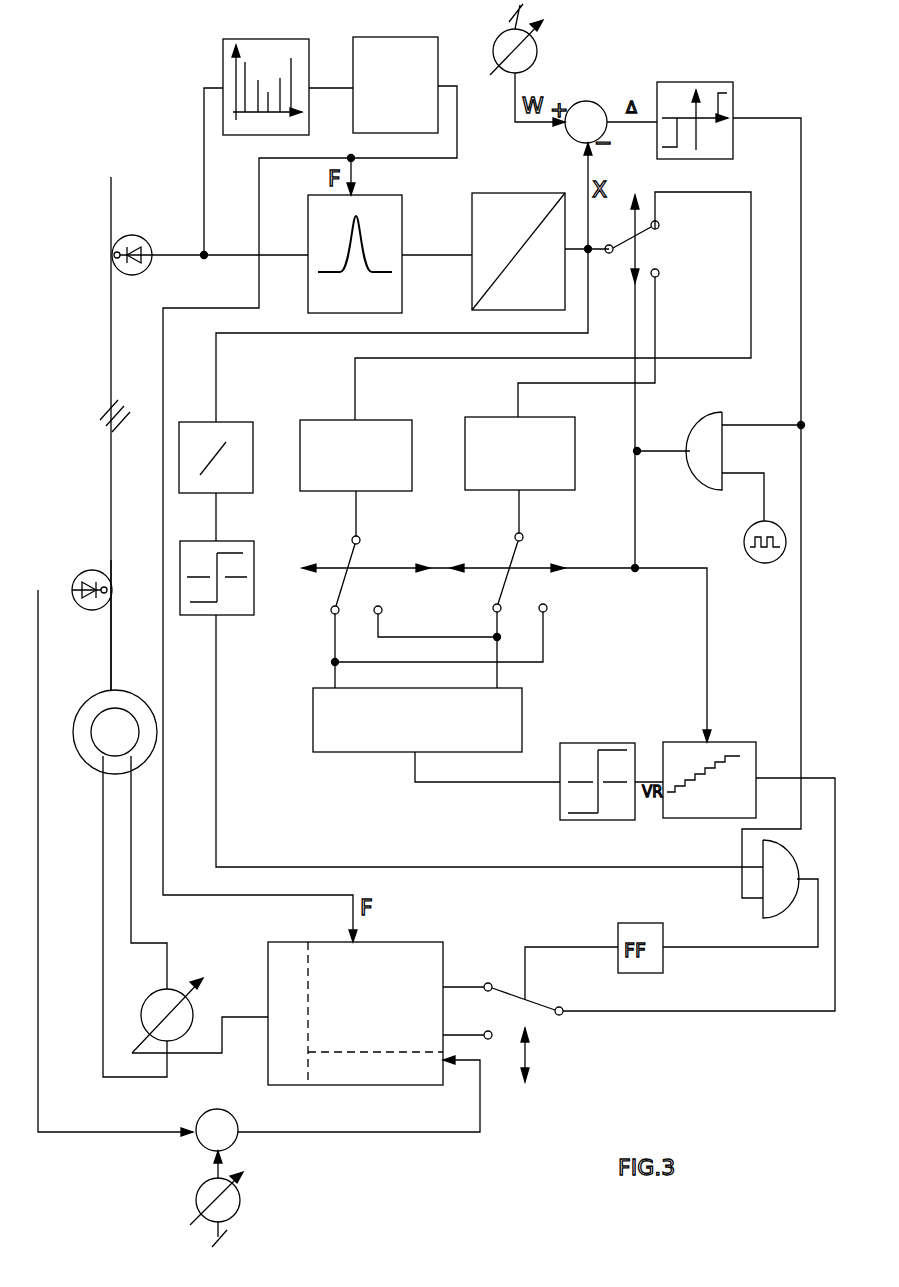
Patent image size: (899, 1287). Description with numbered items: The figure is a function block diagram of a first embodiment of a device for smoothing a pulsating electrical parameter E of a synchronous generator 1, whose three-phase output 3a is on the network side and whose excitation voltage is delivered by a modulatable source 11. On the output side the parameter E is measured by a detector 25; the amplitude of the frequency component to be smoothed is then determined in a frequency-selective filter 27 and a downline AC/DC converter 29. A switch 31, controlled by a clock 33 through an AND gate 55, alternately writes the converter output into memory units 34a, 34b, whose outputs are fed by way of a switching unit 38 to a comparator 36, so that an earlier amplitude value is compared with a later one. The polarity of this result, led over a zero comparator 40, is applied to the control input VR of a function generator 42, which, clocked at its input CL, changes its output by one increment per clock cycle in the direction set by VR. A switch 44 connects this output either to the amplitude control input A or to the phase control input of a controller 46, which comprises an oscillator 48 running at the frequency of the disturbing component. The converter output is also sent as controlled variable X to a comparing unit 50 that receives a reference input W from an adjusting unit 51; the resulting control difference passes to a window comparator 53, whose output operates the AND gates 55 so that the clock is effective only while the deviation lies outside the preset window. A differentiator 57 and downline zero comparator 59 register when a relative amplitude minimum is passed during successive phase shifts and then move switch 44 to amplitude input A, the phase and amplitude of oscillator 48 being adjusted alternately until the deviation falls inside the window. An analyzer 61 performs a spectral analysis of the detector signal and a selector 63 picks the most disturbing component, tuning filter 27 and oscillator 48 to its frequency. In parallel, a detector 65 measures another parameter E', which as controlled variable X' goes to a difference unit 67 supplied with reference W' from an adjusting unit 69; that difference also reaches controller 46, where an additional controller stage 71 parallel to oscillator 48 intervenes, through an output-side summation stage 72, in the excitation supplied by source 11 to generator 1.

The synchronous generator 1 is at (88, 702).
The three-phase output 3a is at (115, 660).
The source 11 is at (195, 1007).
The detector 25 is at (142, 235).
The frequency-selective filter 27 is at (308, 295).
The AC/DC converter 29 is at (472, 292).
The switch 31 is at (660, 250).
The clock 33 is at (753, 570).
The memory unit 34a is at (318, 493).
The memory unit 34b is at (552, 490).
The comparator 36 is at (522, 705).
The switching unit 38 is at (517, 640).
The zero comparator 40 is at (592, 742).
The function generator 42 is at (695, 820).
The switch 44 is at (523, 1018).
The controller 46 is at (412, 940).
The oscillator 48 is at (375, 997).
The comparing unit 50 is at (596, 100).
The adjusting unit 51 is at (540, 47).
The window comparator 53 is at (685, 80).
The logical AND gating element 55 is at (705, 415).
The differentiator 57 is at (238, 420).
The zero comparator 59 is at (232, 615).
The analyzer 61 is at (263, 40).
The selector 63 is at (398, 38).
The detector 65 is at (89, 567).
The difference unit 67 is at (225, 1107).
The adjusting unit 69 is at (240, 1205).
The additional controller stage 71 is at (376, 1068).
The summation stage 72 is at (288, 1013).